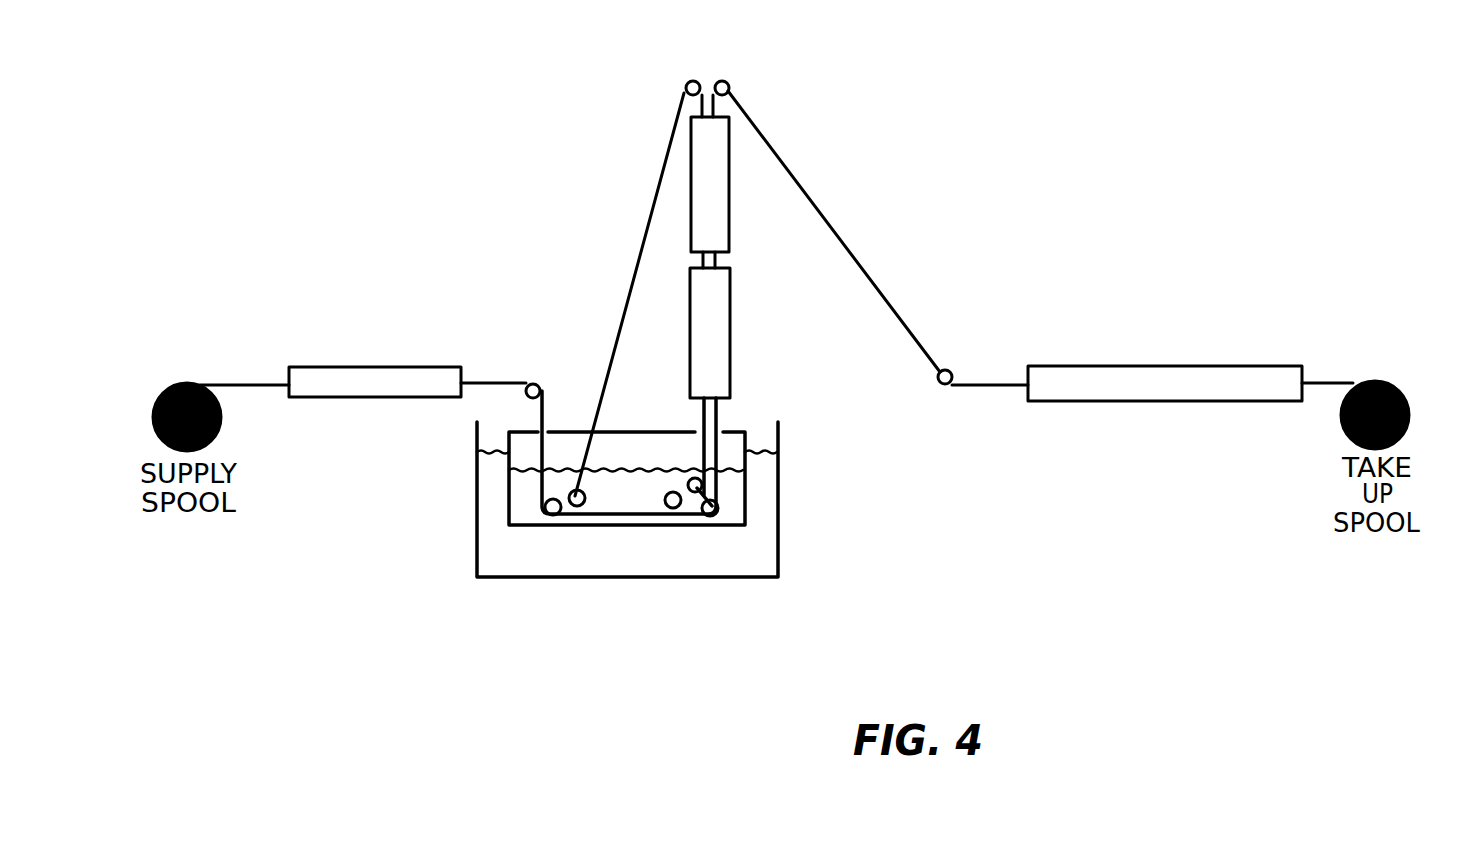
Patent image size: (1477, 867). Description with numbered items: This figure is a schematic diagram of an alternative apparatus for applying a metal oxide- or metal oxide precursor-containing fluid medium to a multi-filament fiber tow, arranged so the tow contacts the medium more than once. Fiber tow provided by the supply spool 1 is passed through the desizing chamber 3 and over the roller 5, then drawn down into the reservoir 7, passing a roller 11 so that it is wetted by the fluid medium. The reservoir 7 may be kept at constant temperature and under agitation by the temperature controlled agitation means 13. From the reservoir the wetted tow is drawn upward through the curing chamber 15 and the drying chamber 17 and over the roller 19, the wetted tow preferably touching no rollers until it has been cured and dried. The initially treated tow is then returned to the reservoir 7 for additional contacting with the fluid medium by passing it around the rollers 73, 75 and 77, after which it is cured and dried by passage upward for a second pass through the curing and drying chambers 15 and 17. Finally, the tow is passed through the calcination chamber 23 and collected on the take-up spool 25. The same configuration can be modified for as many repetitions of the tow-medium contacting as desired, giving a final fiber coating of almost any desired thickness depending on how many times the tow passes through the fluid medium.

The supply spool 1 is at (152, 412).
The desizing chamber 3 is at (343, 397).
The roller 5 is at (537, 383).
The reservoir 7 is at (632, 433).
The roller 11 is at (713, 499).
The temperature controlled agitation means 13 is at (780, 558).
The curing chamber 15 is at (722, 358).
The drying chamber 17 is at (718, 212).
The roller 19 is at (732, 78).
The calcination chamber 23 is at (1120, 402).
The take-up spool 25 is at (1395, 382).
The roller 73 is at (582, 490).
The roller 75 is at (672, 492).
The roller 77 is at (698, 478).